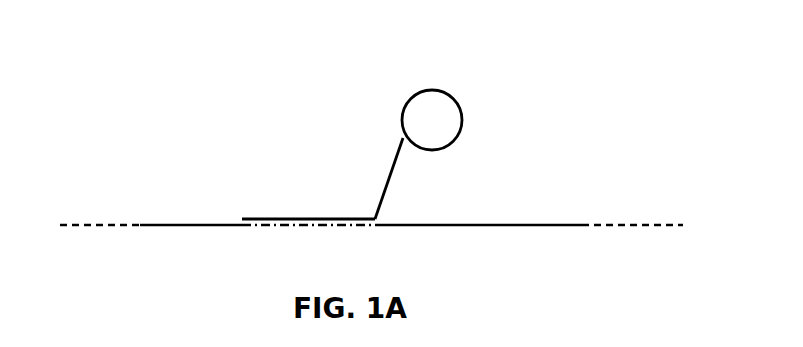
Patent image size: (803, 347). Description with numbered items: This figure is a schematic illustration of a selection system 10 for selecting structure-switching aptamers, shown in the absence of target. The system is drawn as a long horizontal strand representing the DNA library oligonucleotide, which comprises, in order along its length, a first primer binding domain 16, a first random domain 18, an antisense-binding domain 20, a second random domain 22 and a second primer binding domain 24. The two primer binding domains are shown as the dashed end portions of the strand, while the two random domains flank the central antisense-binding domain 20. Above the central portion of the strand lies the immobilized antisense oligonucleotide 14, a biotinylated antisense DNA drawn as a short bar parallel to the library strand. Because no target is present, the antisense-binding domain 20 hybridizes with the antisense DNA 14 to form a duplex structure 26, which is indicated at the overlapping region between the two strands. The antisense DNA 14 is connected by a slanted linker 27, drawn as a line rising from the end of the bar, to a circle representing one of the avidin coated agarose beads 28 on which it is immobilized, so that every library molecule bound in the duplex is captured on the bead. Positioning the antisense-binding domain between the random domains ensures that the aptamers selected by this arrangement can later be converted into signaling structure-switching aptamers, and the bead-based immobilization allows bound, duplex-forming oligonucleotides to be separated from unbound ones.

The selection system 10 is at (163, 131).
The immobilized antisense oligonucleotide 14 is at (267, 217).
The first primer binding domain 16 is at (91, 225).
The first random domain 18 is at (175, 224).
The antisense-binding domain 20 is at (270, 228).
The second random domain 22 is at (483, 223).
The second primer binding domain 24 is at (620, 223).
The duplex structure 26 is at (308, 222).
The shaft / arm 27 is at (398, 144).
The avidin coated agarose beads 28 is at (448, 91).